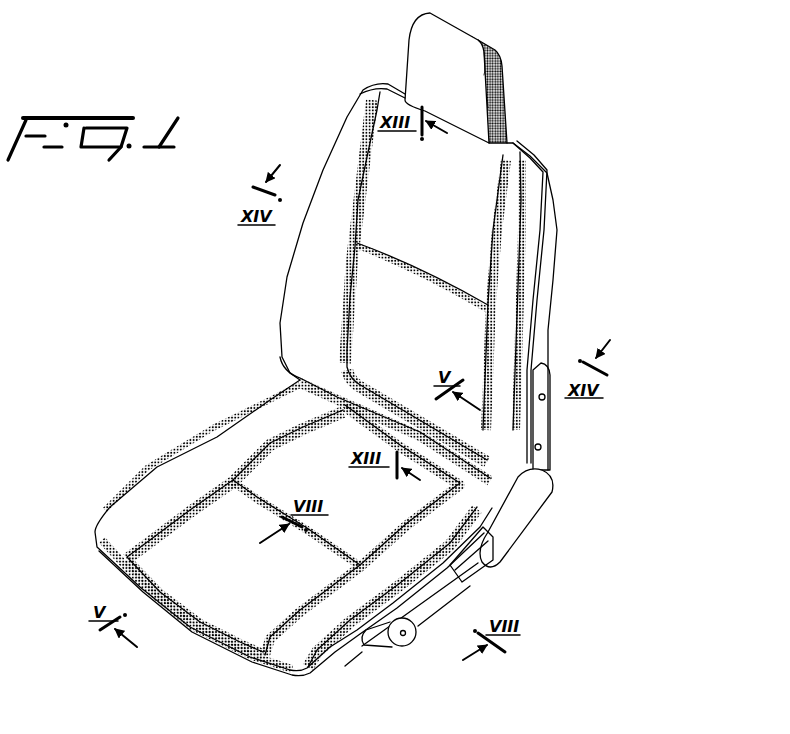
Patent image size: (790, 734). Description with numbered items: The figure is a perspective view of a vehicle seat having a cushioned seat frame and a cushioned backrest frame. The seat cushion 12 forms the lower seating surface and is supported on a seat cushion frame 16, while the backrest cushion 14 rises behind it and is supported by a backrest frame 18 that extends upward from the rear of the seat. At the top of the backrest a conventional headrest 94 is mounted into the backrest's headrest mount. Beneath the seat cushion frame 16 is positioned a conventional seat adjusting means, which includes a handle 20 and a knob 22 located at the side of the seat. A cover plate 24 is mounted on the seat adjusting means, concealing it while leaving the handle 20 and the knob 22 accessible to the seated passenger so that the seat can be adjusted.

The headrest 94 is at (470, 50).
The backrest frame 18 is at (548, 252).
The backrest cushion 14 is at (388, 240).
The seat cushion 12 is at (167, 462).
The cover plate 24 is at (533, 502).
The handle 20 is at (483, 563).
The knob 22 is at (397, 645).
The seat cushion frame 16 is at (350, 643).